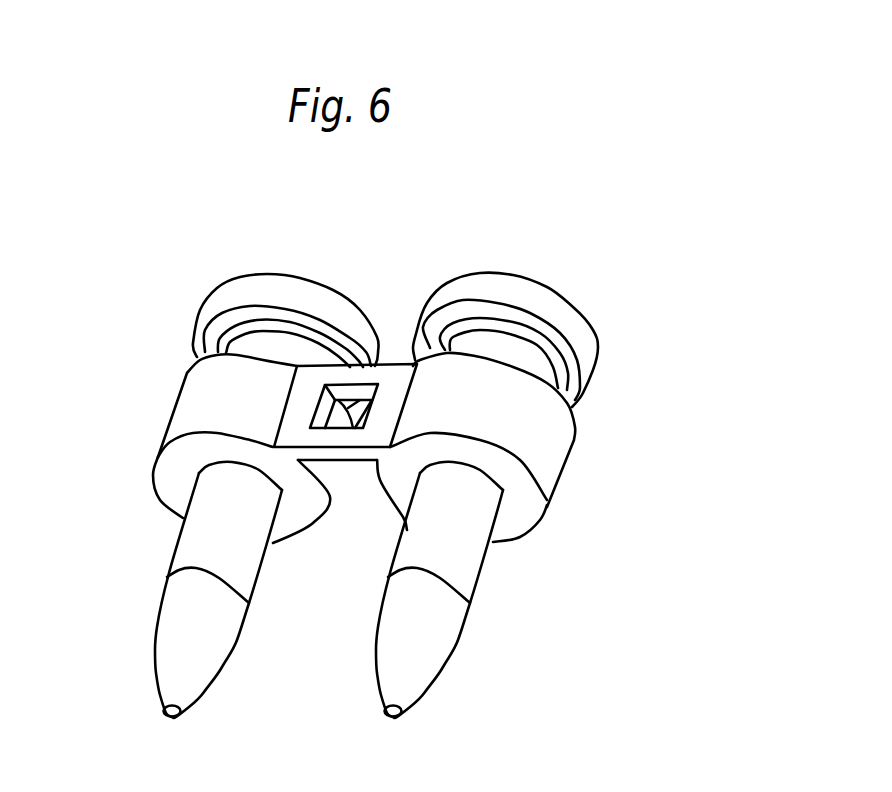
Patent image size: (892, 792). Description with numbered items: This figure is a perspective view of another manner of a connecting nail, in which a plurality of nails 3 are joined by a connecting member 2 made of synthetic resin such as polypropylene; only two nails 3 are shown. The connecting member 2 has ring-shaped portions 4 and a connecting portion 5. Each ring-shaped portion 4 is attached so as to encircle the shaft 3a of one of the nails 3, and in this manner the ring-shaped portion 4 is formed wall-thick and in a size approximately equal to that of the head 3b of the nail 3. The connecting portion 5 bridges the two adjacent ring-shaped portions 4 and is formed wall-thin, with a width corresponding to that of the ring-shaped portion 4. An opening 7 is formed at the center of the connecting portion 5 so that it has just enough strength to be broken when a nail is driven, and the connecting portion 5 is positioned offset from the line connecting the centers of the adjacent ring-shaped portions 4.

The connecting member 2 is at (382, 430).
The nail 3 is at (184, 534).
The shaft 3a is at (460, 573).
The head 3b is at (565, 302).
The ring-shaped portion 4 is at (183, 393).
The connecting portion 5 is at (386, 372).
The opening 7 is at (339, 428).